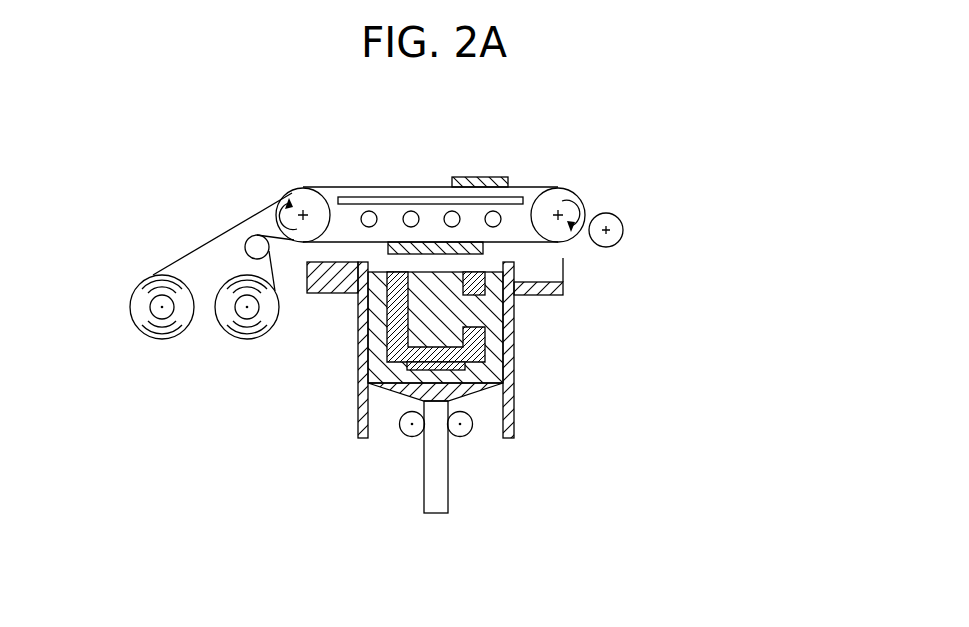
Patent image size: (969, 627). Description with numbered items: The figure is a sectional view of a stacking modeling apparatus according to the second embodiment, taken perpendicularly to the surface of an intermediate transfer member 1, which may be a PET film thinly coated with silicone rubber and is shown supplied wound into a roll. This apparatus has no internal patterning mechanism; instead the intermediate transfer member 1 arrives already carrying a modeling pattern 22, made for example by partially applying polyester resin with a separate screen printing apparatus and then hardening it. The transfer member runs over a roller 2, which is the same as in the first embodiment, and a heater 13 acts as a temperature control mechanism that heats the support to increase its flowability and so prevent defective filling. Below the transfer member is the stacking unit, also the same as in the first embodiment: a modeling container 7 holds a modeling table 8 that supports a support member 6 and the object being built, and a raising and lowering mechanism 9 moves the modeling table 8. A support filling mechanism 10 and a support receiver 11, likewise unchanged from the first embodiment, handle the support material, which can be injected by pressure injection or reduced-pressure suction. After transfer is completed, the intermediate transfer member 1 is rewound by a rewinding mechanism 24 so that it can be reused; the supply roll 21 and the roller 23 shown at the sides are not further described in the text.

The intermediate transfer member 1 is at (360, 187).
The roller 2 is at (299, 200).
The heater 13 is at (371, 211).
The modeling pattern 22 is at (477, 180).
The guide roller 23 is at (609, 214).
The supply roll 21 is at (130, 307).
The rewinding mechanism 24 is at (243, 340).
The support filling mechanism 10 is at (333, 290).
The support receiver 11 is at (562, 290).
The support member 6 is at (485, 313).
The modeling container 7 is at (512, 393).
The modeling table 8 is at (465, 388).
The raising and lowering mechanism 9 is at (440, 455).